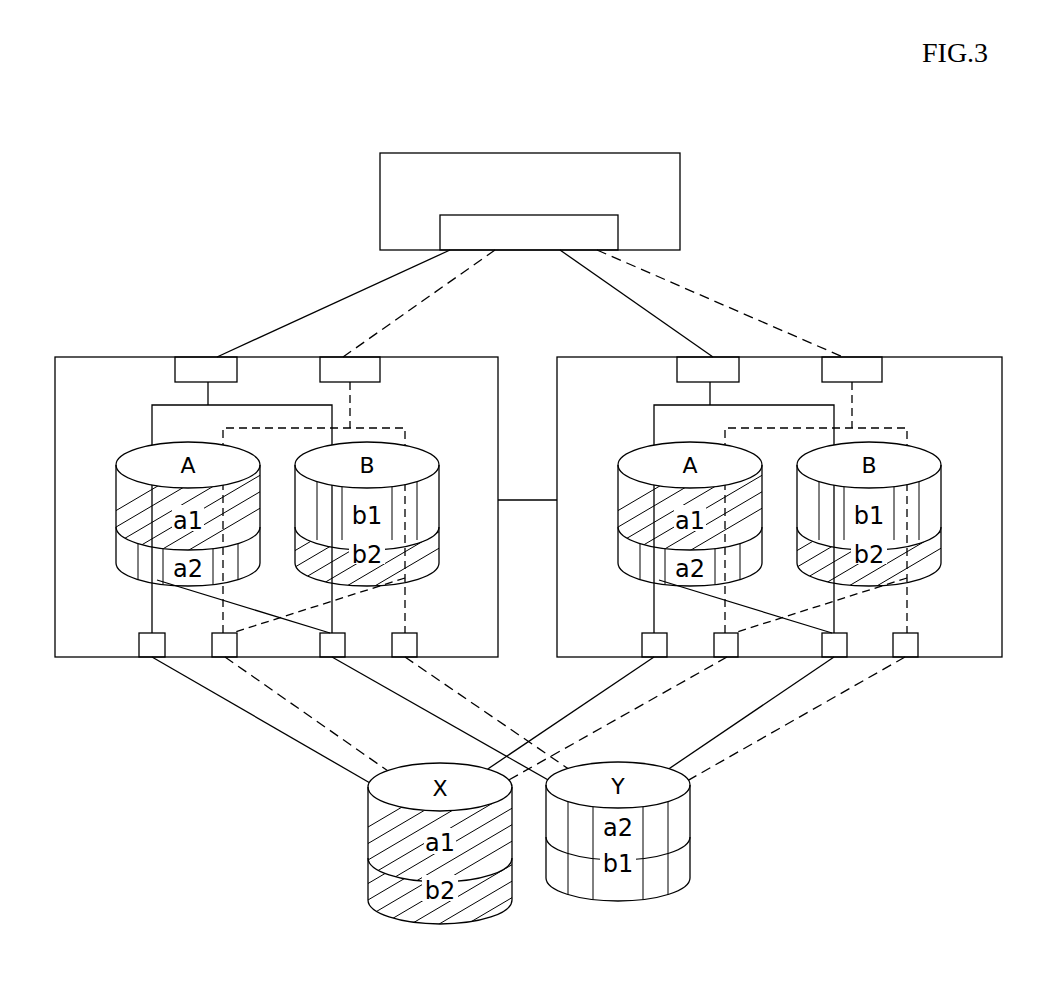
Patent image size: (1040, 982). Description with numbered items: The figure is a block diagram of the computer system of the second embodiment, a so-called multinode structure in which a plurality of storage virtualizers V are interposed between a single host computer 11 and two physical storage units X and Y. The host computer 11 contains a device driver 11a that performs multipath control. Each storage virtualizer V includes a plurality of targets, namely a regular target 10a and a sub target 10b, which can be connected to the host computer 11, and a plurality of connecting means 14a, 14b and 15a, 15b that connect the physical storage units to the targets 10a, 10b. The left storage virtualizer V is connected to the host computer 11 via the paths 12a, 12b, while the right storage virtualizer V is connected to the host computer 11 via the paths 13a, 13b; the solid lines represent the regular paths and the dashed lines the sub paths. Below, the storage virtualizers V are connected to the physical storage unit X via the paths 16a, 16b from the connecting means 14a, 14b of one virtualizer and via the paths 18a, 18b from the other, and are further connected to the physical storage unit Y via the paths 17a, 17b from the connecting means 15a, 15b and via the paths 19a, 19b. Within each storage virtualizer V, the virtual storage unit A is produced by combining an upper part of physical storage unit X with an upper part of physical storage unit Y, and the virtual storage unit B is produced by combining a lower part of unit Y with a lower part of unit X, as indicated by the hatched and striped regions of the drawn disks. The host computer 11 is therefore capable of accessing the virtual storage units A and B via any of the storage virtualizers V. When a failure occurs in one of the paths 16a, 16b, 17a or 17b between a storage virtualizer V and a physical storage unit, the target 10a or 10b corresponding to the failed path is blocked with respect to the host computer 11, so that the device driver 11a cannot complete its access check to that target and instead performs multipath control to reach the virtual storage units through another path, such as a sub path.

The host computer 11 is at (668, 172).
The device driver 11a is at (613, 228).
The regular path 12a is at (315, 312).
The sub path 12b is at (437, 293).
The path 13a is at (628, 299).
The path 13b is at (743, 312).
The storage virtualizer V is at (68, 368).
The regular target 10a is at (201, 357).
The sub target 10b is at (378, 371).
The connecting means 14a is at (143, 648).
The connecting means 14b is at (237, 648).
The connecting means 15a is at (347, 638).
The connecting means 15b is at (410, 645).
The path 16a is at (237, 707).
The path 16b is at (312, 715).
The path 17a is at (368, 680).
The path 17b is at (450, 718).
The path 18a is at (602, 700).
The path 18b is at (675, 687).
The path 19a is at (720, 735).
The path 19b is at (807, 712).